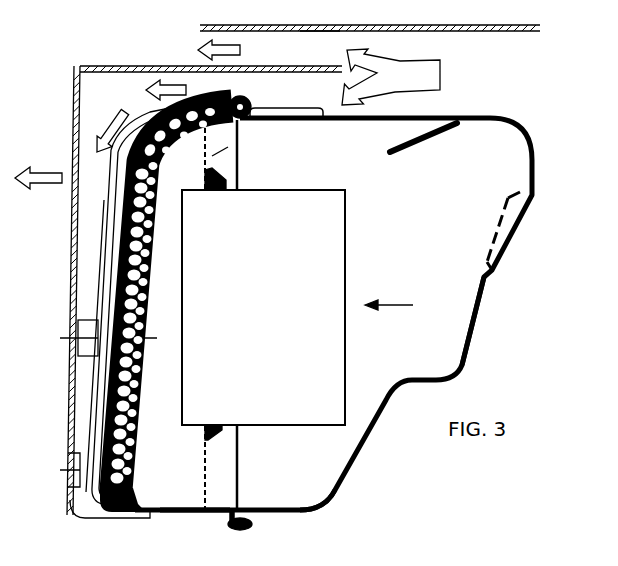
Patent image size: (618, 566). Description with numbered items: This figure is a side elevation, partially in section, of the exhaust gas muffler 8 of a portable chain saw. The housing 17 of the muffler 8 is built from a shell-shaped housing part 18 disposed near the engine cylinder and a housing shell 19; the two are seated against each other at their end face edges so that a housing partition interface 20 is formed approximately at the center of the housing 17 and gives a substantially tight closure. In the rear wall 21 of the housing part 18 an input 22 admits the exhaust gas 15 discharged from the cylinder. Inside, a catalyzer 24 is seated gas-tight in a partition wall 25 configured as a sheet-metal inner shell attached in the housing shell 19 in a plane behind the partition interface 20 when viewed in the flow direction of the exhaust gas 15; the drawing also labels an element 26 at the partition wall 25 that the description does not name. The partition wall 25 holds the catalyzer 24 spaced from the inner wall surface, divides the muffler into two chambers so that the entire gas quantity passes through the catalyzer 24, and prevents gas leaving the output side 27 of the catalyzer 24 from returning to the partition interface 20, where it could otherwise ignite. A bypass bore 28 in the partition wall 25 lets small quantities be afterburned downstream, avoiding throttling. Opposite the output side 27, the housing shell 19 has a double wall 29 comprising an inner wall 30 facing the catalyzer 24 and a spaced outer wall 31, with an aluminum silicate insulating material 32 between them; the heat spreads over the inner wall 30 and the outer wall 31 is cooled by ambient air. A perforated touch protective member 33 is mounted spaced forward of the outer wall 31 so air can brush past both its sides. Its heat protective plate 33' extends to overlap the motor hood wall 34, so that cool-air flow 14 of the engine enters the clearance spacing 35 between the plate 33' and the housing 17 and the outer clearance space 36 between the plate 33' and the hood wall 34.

The exhaust gas muffler 8 is at (456, 95).
The cool-air flow 14 is at (398, 64).
The exhaust gas 15 is at (396, 300).
The housing 17 is at (268, 512).
The shell-shaped housing part 18 is at (326, 503).
The housing shell 19 is at (192, 508).
The housing partition interface 20 is at (240, 140).
The rear wall 21 is at (470, 350).
The input 22 is at (513, 212).
The catalyzer 24 is at (306, 321).
The partition wall 25 is at (196, 192).
The seal lip 26 is at (238, 174).
The output side 27 is at (184, 336).
The bypass bore 28 is at (196, 466).
The double wall 29 is at (98, 436).
The inner wall 30 is at (142, 383).
The outer wall 31 is at (102, 394).
The insulating material 32 is at (134, 233).
The touch protective member 33 is at (45, 290).
The heat protective plate 33' is at (211, 51).
The motor hood wall 34 is at (522, 31).
The clearance spacing 35 is at (293, 113).
The outer clearance space 36 is at (298, 44).